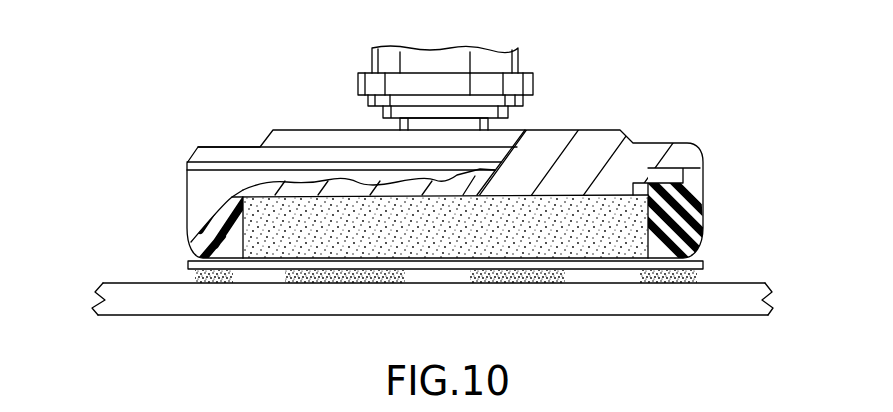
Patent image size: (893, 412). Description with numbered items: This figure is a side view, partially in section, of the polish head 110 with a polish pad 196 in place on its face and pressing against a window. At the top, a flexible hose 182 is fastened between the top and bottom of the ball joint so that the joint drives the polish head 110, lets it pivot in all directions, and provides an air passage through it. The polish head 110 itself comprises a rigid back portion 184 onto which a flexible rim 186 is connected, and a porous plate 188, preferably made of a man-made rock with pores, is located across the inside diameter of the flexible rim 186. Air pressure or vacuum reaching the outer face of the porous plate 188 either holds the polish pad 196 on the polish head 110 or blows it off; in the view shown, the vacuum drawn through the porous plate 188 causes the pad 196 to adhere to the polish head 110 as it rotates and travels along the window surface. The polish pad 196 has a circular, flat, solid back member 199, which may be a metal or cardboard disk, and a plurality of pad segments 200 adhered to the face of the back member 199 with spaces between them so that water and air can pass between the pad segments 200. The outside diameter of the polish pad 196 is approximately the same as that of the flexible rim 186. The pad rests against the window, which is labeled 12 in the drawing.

The polish head 110 is at (451, 190).
The flexible hose 182 is at (372, 62).
The rigid back portion 184 is at (572, 129).
The flexible rim 186 is at (695, 208).
The porous plate 188 is at (447, 236).
The polish pad 196 is at (710, 269).
The back member 199 is at (190, 262).
The pad segments 200 is at (446, 314).
The panel 12 is at (103, 283).